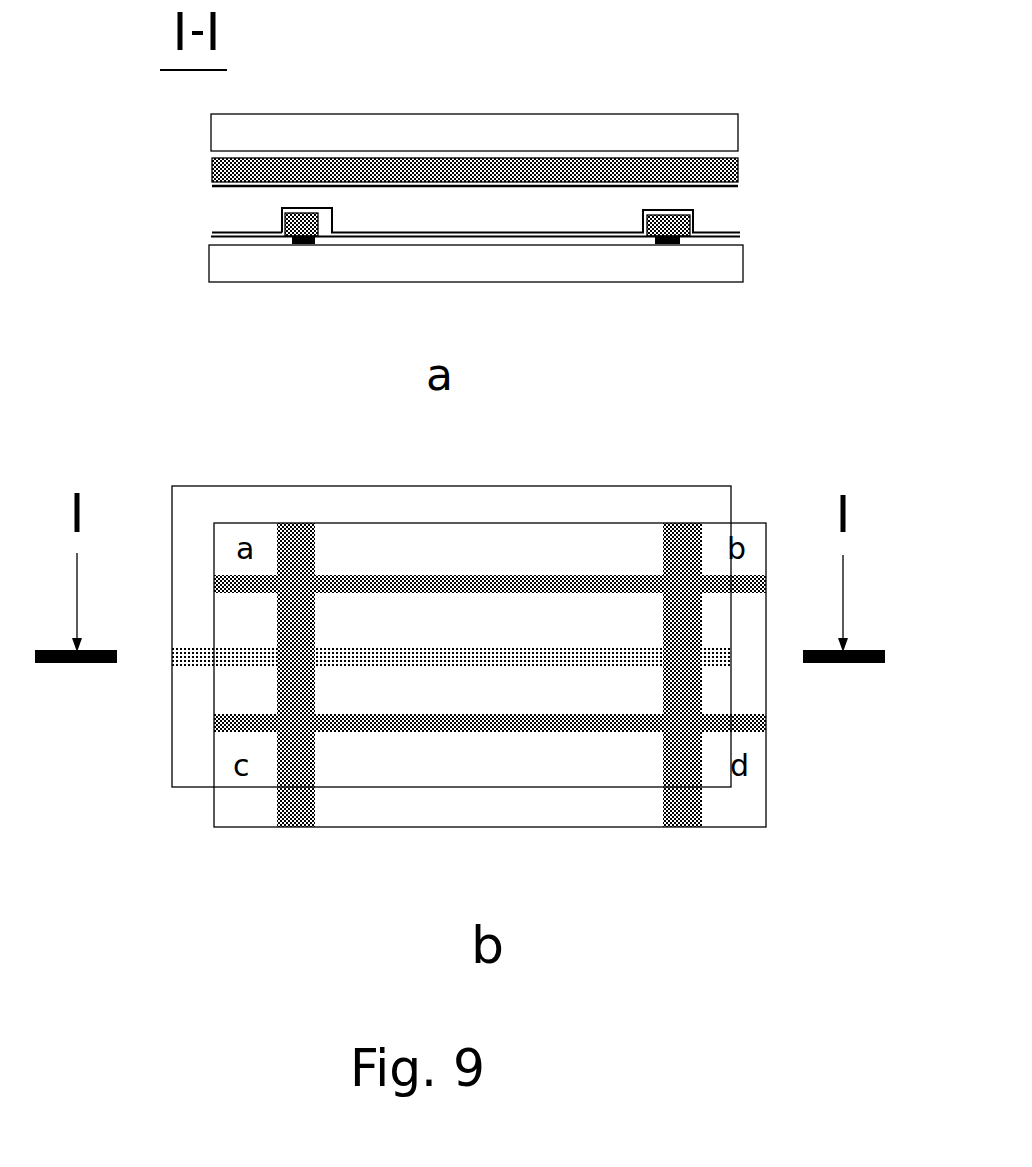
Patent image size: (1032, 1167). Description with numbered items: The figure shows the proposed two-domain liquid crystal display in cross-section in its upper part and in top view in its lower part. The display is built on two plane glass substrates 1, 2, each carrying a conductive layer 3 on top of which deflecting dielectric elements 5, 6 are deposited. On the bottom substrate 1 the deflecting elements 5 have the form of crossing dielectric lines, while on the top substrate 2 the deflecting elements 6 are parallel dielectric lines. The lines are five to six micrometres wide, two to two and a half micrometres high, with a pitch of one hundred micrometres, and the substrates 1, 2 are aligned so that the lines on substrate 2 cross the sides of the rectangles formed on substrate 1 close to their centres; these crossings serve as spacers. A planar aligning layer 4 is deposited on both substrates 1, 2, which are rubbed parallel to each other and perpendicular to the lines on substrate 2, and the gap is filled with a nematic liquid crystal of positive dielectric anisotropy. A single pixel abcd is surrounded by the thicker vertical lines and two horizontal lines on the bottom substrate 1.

The glass substrate 1 is at (223, 263).
The glass substrate 2 is at (230, 135).
The conductive layer 3 is at (732, 157).
The planar aligning layer 4 is at (225, 186).
The deflecting dielectric element 5 is at (680, 243).
The deflecting dielectric element 6 is at (700, 162).